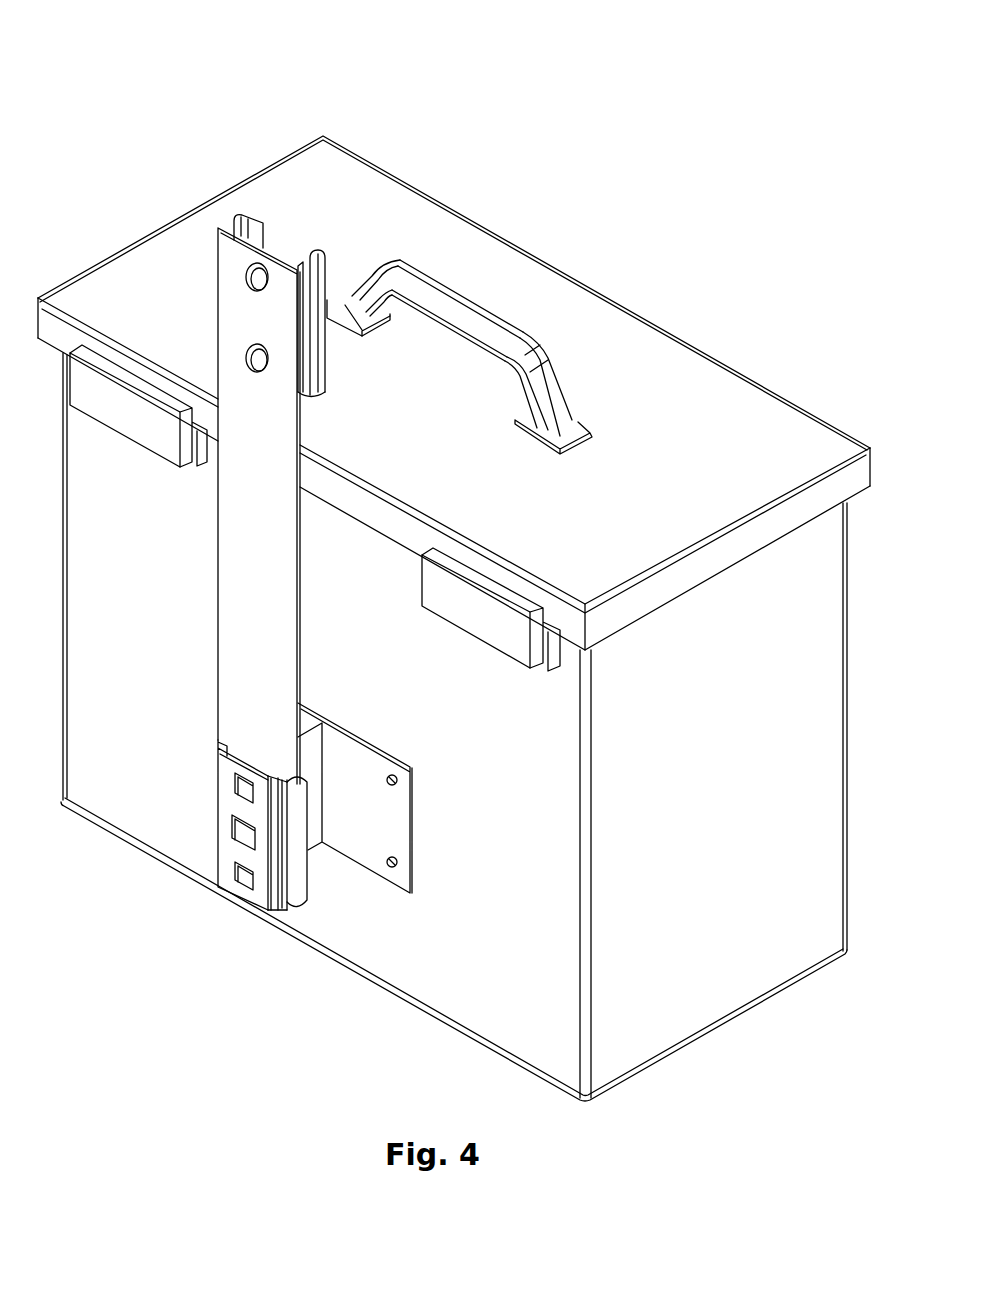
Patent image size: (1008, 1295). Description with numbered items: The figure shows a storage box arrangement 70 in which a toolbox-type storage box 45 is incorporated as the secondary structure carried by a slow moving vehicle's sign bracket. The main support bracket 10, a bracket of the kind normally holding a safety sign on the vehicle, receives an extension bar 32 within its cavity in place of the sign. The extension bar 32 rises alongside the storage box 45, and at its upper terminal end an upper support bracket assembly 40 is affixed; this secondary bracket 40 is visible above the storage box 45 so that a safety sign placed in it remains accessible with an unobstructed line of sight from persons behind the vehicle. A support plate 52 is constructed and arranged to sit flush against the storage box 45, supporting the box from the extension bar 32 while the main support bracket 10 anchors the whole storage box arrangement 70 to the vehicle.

The storage box arrangement 70 is at (328, 100).
The storage box 45 is at (567, 313).
The upper support bracket assembly 40 is at (325, 298).
The extension bar 32 is at (218, 665).
The main support bracket 10 is at (258, 890).
The support plate 52 is at (375, 822).